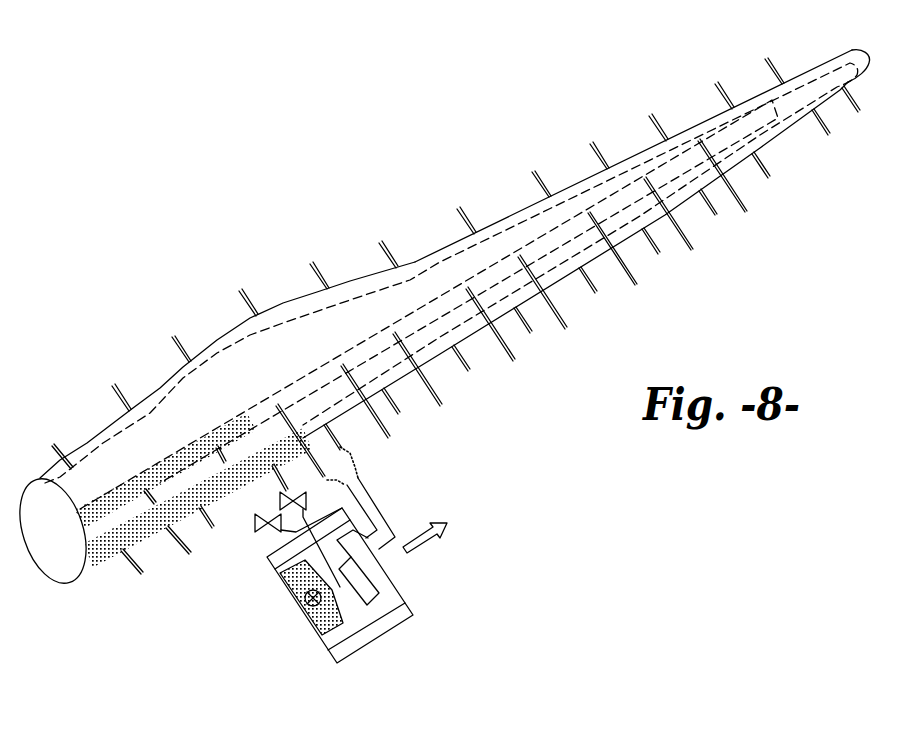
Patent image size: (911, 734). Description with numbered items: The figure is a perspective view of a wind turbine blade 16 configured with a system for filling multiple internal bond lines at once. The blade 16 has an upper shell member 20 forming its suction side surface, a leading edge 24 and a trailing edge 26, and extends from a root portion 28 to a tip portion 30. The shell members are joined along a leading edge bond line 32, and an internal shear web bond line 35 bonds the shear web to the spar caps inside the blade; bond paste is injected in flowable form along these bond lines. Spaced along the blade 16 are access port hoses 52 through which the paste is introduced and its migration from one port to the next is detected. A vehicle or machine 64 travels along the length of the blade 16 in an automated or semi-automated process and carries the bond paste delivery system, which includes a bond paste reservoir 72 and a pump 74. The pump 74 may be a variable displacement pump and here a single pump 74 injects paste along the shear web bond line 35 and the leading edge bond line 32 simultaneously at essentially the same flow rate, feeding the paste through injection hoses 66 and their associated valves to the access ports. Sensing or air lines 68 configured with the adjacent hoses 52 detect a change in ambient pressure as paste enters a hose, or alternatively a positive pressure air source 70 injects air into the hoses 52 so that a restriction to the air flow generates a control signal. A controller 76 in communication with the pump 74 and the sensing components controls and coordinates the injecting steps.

The wind turbine blade 16 is at (403, 131).
The upper shell member 20 is at (242, 368).
The leading edge 24 is at (553, 287).
The trailing edge 26 is at (575, 184).
The root portion 28 is at (98, 487).
The tip portion 30 is at (841, 68).
The leading edge bond line 32 is at (433, 347).
The internal shear web bond line 35 is at (353, 358).
The access port hose 52 is at (381, 244).
The vehicle or machine 64 is at (303, 620).
The injection hoses 66 is at (281, 533).
The sensing or air lines 68 is at (363, 480).
The positive pressure air source 70 is at (380, 565).
The bond paste reservoir 72 is at (363, 645).
The pump 74 is at (300, 600).
The controller 76 is at (378, 588).